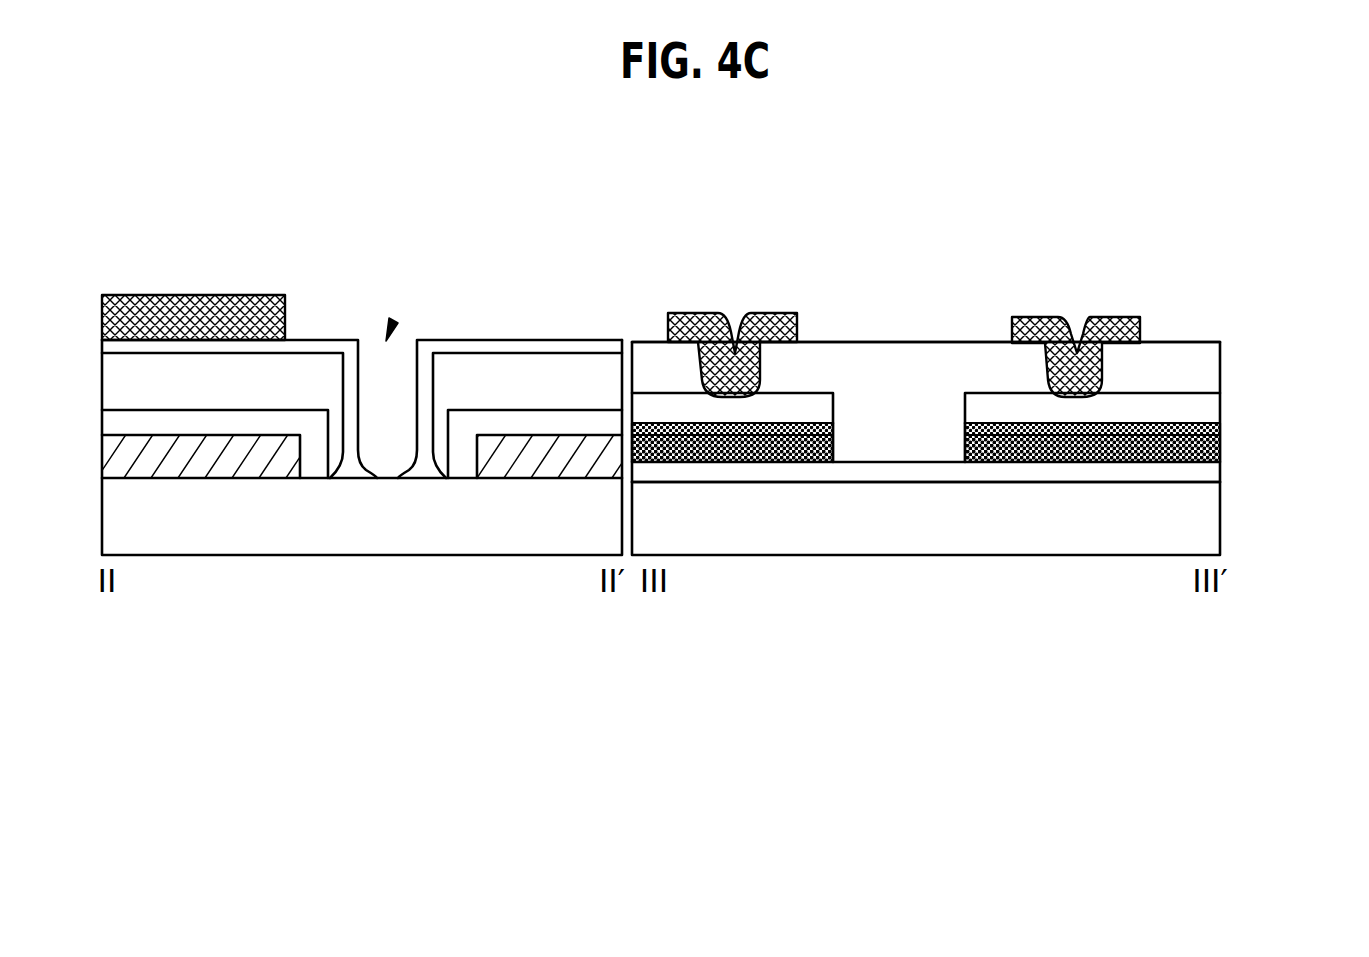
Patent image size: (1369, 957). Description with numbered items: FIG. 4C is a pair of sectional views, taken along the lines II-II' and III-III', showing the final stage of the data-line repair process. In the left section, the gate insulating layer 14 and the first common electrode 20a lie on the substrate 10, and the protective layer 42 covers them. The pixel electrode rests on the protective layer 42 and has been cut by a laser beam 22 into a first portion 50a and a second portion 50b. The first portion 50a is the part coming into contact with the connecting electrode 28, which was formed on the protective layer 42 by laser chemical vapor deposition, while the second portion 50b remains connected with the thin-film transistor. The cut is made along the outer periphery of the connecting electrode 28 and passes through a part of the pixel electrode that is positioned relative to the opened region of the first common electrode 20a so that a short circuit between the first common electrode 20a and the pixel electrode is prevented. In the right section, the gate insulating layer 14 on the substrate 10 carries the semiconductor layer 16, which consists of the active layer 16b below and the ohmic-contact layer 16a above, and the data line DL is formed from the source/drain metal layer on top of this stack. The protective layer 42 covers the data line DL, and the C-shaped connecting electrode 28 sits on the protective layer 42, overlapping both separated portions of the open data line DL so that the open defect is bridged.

The substrate 10 is at (102, 508).
The gate insulating layer 14 is at (102, 423).
The semiconductor layer 16 is at (1302, 410).
The ohmic-contact layer 16a is at (1220, 423).
The active layer 16b is at (1220, 448).
The first common electrode 20a is at (102, 455).
The welding points 22 is at (392, 322).
The connecting electrode 28 is at (193, 306).
The protective layer 42 is at (102, 380).
The first portion of the pixel electrode 50a is at (102, 342).
The second portion of the pixel electrode 50b is at (553, 341).
The data line DL is at (1163, 405).